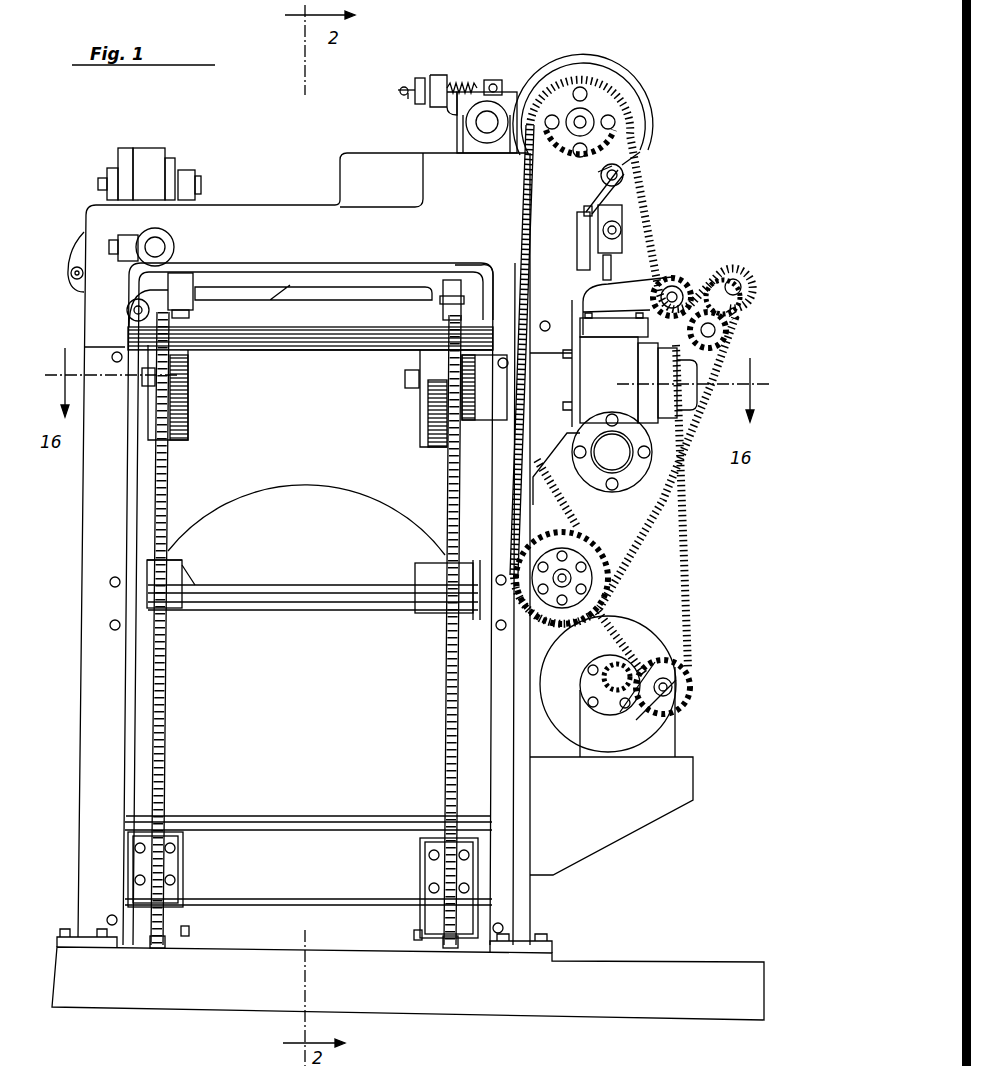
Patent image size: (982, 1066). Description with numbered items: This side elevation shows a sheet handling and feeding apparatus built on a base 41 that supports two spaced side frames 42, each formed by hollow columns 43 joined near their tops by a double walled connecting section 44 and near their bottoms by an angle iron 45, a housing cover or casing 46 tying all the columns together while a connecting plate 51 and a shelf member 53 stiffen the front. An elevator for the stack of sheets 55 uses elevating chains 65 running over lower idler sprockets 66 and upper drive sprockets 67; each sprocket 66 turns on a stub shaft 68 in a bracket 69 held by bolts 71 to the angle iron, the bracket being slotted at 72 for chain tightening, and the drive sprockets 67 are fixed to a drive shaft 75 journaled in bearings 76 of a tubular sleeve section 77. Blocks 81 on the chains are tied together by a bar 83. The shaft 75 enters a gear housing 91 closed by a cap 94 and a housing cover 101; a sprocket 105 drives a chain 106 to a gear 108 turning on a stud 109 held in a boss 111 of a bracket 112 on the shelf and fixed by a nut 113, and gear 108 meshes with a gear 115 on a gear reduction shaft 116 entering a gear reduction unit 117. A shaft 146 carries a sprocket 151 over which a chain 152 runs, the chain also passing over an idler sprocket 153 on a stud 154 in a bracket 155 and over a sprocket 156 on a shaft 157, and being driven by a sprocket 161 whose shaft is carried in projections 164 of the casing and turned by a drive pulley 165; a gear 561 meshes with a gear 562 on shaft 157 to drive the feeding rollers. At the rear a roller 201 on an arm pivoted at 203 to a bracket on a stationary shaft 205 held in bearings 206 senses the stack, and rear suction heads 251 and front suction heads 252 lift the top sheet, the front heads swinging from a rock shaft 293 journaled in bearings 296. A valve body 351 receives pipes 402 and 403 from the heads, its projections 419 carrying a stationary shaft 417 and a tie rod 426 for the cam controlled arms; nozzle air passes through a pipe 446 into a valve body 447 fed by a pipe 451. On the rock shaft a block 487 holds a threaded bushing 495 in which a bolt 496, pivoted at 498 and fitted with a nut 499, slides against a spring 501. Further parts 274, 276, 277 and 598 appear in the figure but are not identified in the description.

The base 41 is at (683, 965).
The side frame 42 is at (525, 905).
The hollow column 43 is at (92, 712).
The double walled connecting section 44 is at (341, 489).
The angle iron 45 is at (321, 834).
The housing cover or casing 46 is at (282, 214).
The connecting plate 51 is at (566, 504).
The shelf member 53 is at (611, 816).
The stack of sheets 55 is at (300, 334).
The elevating chains 65 is at (172, 488).
The lower idler sprocket 66 is at (168, 946).
The upper drive sprocket 67 is at (180, 382).
The stub shaft 68 is at (190, 930).
The bracket 69 is at (182, 907).
The bolts 71 is at (178, 850).
The slot 72 is at (178, 882).
The drive shaft 75 is at (476, 386).
The bearings 76 is at (200, 357).
The tubular sleeve section 77 is at (330, 352).
The blocks 81 is at (182, 578).
The bar 83 is at (355, 600).
The gear housing 91 is at (605, 363).
The cap 94 is at (697, 395).
The housing cover 101 is at (592, 458).
The sprocket 105 is at (690, 488).
The chain 106 is at (695, 544).
The gear 108 is at (692, 692).
The stud 109 is at (674, 688).
The boss 111 is at (630, 706).
The bracket 112 is at (668, 742).
The nut 113 is at (669, 686).
The gear 115 is at (617, 667).
The gear reduction shaft 116 is at (602, 684).
The gear reduction unit 117 is at (635, 638).
The shaft 146 is at (588, 587).
The sprocket 151 is at (602, 578).
The chain 152 is at (652, 204).
The idler sprocket 153 is at (745, 300).
The stud 154 is at (752, 285).
The bracket 155 is at (601, 315).
The sprocket 156 is at (695, 274).
The shaft 157 is at (720, 280).
The sprocket 161 is at (620, 102).
The upwardly extending projections 164 is at (604, 168).
The drive pulley 165 is at (656, 116).
The roller 201 is at (135, 318).
The pivot 203 is at (74, 278).
The stationary supporting shaft 205 is at (158, 247).
The bearings 206 is at (160, 236).
The rear suction heads 251 is at (195, 298).
The front suction heads 252 is at (440, 290).
The pulley 274 is at (190, 172).
The pulley flange 276 is at (201, 185).
The pulley 277 is at (138, 160).
The rock shaft 293 is at (476, 126).
The bearings 296 is at (488, 140).
The valve body 351 is at (584, 248).
The pipe 402 is at (300, 294).
The pipe 403 is at (478, 272).
The stationary shaft 417 is at (648, 158).
The projections 419 is at (590, 201).
The tie rod 426 is at (623, 180).
The pipe 446 is at (600, 233).
The valve body 447 is at (622, 230).
The pipe 451 is at (614, 272).
The block 487 is at (448, 85).
The threaded bushing 495 is at (420, 80).
The bolt 496 is at (400, 90).
The pivotal connection 498 is at (498, 78).
The nut 499 is at (408, 96).
The spring 501 is at (470, 82).
The gear 561 is at (728, 355).
The gear 562 is at (666, 292).
The gear 598 is at (726, 330).